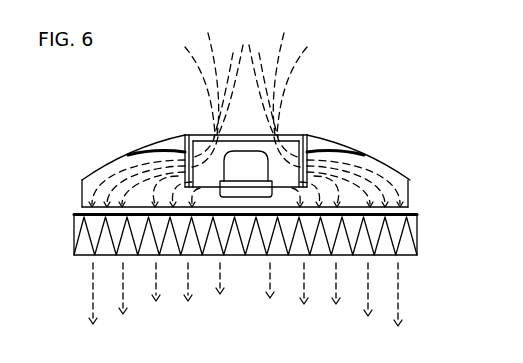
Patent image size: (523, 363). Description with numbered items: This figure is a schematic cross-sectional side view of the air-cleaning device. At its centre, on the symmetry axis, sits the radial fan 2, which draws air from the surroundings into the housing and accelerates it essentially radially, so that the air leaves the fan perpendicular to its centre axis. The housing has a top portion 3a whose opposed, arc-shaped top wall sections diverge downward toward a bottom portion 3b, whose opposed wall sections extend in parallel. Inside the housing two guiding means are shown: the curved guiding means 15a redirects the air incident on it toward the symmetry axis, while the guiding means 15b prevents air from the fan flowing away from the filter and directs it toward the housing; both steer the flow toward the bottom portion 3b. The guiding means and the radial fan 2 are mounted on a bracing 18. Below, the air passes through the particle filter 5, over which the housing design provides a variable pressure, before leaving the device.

The radial fan 2 is at (246, 165).
The top portion 3a is at (176, 138).
The bottom portion 3b is at (82, 198).
The particle filter 5 is at (352, 233).
The guiding means 15a is at (133, 182).
The guiding means 15b is at (145, 153).
The bracing 18 is at (188, 137).